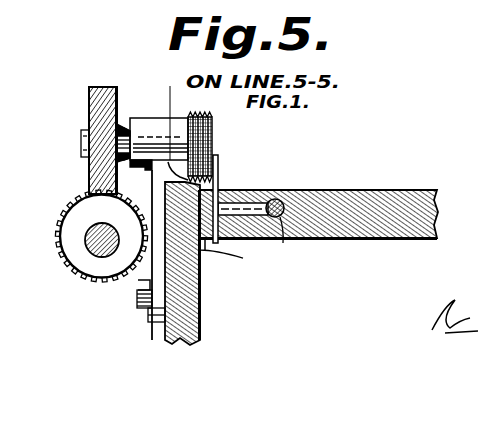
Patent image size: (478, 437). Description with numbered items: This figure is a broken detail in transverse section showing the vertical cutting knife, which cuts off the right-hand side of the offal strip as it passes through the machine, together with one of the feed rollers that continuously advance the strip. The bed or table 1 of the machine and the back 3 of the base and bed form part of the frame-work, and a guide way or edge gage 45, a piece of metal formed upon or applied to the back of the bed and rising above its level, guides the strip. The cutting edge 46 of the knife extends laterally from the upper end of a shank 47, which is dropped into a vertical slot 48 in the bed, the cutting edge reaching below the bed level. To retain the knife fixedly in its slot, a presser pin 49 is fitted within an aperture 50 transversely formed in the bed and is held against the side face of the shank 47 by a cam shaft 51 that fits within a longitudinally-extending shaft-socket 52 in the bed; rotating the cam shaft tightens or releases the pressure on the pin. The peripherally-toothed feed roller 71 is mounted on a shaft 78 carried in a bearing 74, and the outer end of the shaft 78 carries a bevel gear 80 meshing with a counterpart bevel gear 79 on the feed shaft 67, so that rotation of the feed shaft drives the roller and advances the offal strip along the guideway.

The bed or table 1 is at (410, 196).
The back of the base and bed 3 is at (165, 322).
The guide way or edge gage 45 is at (164, 204).
The vertical cutting knife or cutter 46 is at (219, 163).
The shank 47 is at (226, 260).
The vertical slot 48 is at (209, 248).
The presser pin 49 is at (236, 204).
The aperture 50 is at (279, 201).
The cam shaft 51 is at (290, 200).
The shaft-socket 52 is at (294, 242).
The feed shaft 67 is at (84, 240).
The feed roller 71 is at (213, 136).
The bearing 74 is at (150, 116).
The shaft 78 is at (81, 138).
The bevel gear 79 is at (78, 215).
The bevel gear 80 is at (89, 107).